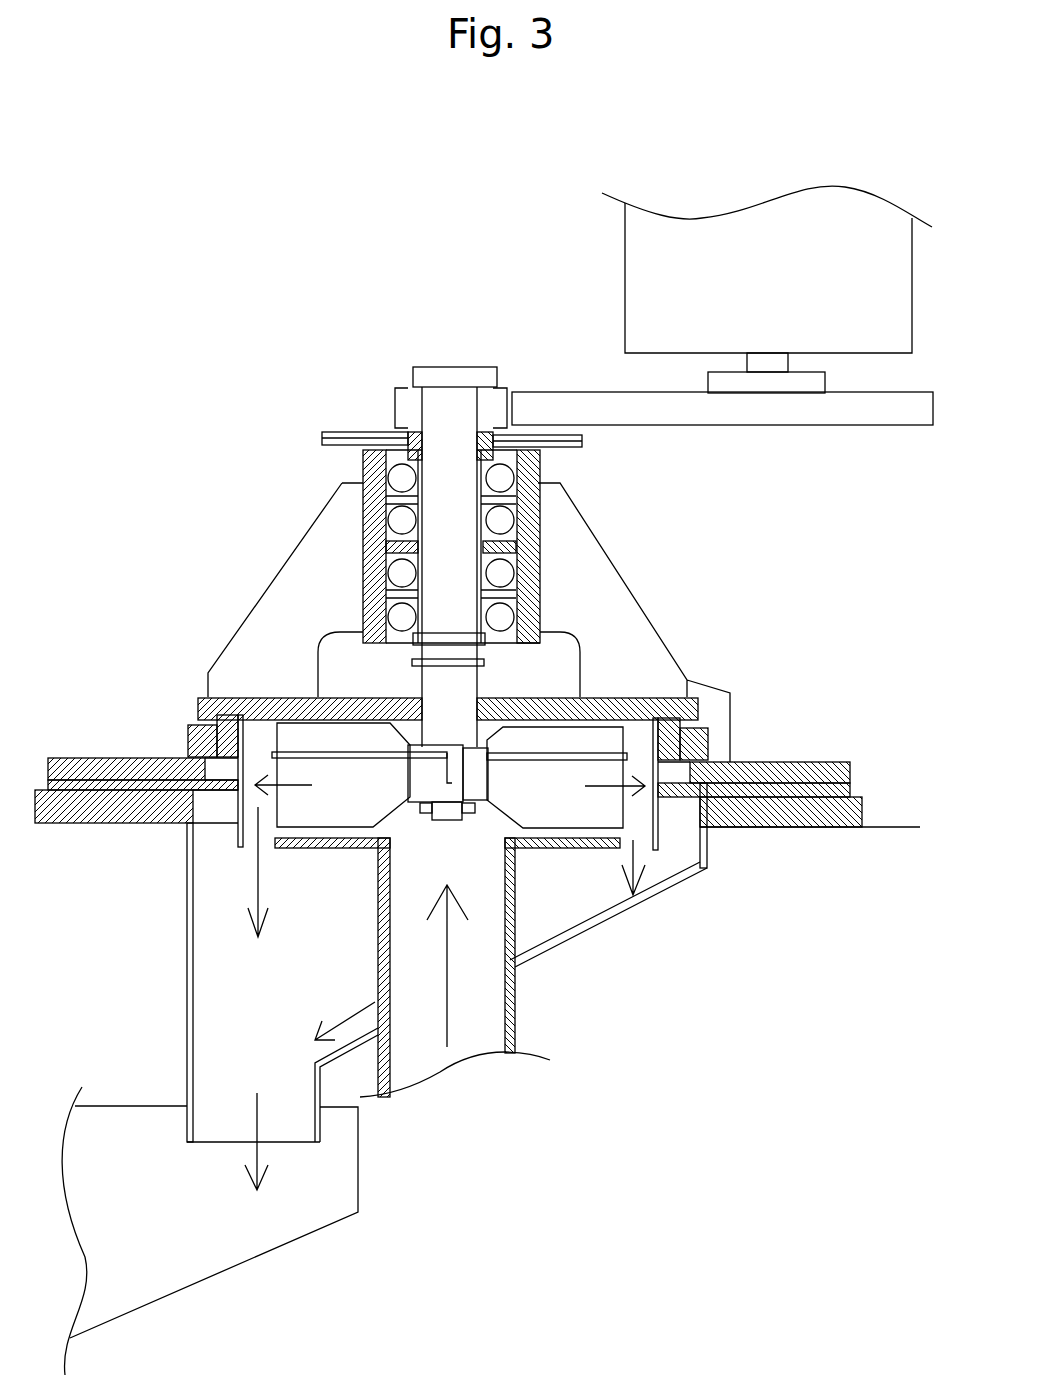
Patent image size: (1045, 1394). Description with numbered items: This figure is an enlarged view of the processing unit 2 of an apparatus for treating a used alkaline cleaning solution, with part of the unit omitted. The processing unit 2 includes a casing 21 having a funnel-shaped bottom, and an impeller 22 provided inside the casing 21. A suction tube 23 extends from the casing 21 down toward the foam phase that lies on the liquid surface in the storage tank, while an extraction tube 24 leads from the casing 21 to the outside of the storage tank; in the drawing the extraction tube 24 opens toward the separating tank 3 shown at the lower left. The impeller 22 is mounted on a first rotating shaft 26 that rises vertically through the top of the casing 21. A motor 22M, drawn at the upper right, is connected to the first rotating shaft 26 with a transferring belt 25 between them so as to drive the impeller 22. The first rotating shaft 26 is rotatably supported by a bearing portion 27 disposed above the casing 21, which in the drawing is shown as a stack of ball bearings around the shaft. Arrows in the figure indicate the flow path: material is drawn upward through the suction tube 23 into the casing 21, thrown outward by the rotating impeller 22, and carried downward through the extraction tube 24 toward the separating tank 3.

The processing unit 2 is at (641, 682).
The separating tank 3 is at (207, 1277).
The casing 21 is at (658, 848).
The impeller 22 is at (313, 752).
The motor 22M is at (640, 273).
The suction tube 23 is at (515, 915).
The extraction tube 24 is at (307, 1120).
The transferring belt 25 is at (588, 398).
The first rotating shaft 26 is at (455, 380).
The bearing portion 27 is at (363, 532).